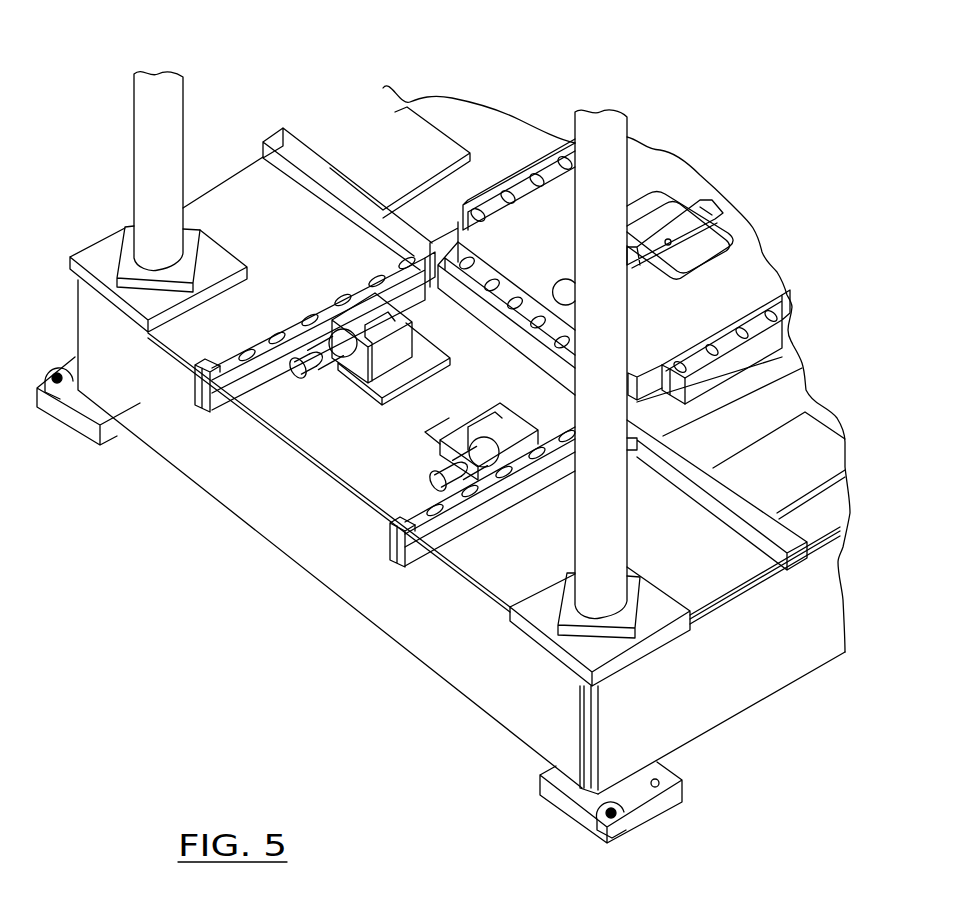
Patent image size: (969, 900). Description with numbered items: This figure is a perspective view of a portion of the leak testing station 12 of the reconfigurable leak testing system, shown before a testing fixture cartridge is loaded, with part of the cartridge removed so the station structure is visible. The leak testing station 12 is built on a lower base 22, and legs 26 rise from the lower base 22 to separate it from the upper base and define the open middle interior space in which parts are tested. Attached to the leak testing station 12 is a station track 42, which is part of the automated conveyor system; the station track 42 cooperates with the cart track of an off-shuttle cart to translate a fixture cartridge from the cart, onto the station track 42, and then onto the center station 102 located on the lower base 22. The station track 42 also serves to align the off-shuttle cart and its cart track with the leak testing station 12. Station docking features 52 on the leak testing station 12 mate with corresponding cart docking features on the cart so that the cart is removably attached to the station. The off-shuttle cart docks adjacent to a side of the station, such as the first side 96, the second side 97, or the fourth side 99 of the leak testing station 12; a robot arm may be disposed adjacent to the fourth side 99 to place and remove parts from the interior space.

The leak testing station 12 is at (273, 74).
The lower base 22 is at (803, 630).
The legs 26 is at (147, 158).
The station track 42 is at (230, 353).
The station docking features 52 is at (308, 370).
The first side 96 is at (292, 517).
The second side 97 is at (768, 655).
The fourth side 99 is at (333, 113).
The center station 102 is at (745, 280).